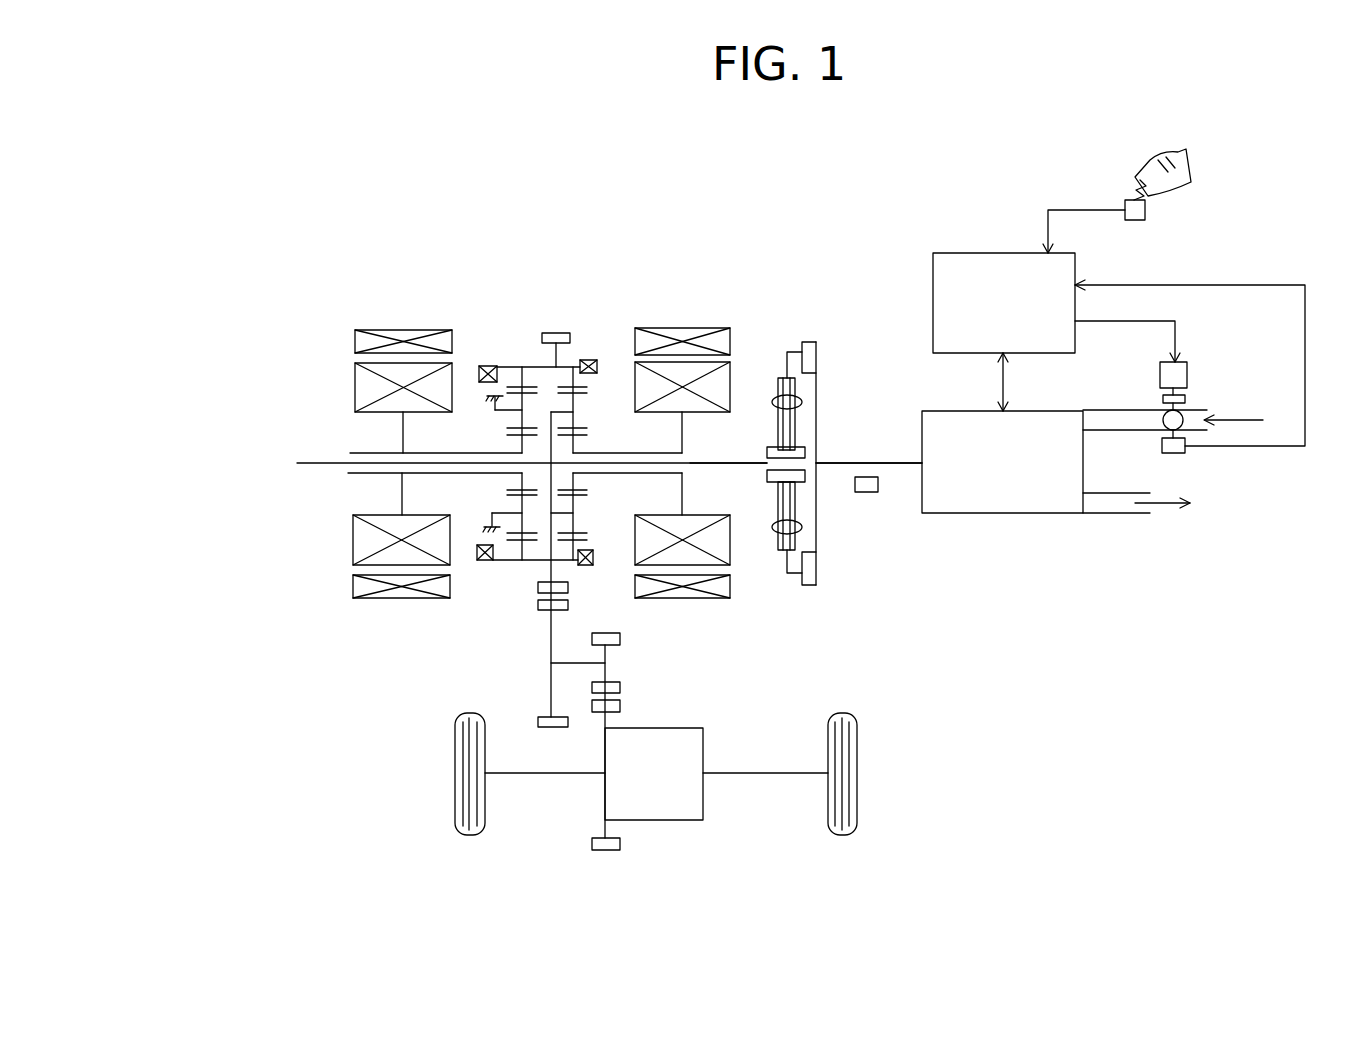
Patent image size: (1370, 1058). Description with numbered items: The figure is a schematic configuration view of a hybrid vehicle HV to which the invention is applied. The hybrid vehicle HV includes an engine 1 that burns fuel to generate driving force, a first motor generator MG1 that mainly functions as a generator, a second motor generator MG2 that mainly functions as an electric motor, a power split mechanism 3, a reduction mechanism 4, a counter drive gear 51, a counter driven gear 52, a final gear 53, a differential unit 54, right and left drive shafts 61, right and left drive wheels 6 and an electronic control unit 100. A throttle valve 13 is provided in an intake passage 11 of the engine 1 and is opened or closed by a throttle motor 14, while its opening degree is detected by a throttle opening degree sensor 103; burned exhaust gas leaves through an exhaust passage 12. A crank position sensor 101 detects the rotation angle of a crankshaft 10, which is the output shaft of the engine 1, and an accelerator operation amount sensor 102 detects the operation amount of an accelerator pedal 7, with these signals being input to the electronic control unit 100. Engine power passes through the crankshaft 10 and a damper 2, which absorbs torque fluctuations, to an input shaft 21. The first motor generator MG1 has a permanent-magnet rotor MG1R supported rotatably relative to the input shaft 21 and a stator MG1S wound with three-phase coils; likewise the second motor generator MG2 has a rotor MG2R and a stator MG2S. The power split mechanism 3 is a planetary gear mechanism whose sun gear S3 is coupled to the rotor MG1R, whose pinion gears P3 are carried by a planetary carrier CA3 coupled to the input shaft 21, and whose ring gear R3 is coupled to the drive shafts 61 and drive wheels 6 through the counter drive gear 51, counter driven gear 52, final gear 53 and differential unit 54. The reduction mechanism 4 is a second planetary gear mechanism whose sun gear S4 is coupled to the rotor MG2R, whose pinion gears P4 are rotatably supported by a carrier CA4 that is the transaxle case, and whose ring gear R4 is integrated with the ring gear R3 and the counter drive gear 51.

The engine 1 is at (1028, 514).
The damper 2 is at (820, 568).
The power split mechanism 3 is at (602, 359).
The reduction mechanism 4 is at (506, 362).
The drive wheels 6 is at (452, 740).
The accelerator pedal 7 is at (1130, 165).
The crankshaft 10 is at (860, 463).
The intake passage 11 is at (1120, 416).
The exhaust passage 12 is at (1113, 506).
The throttle valve 13 is at (1182, 415).
The throttle motor 14 is at (1187, 362).
The input shaft 21 is at (728, 463).
The counter drive gear 51 is at (556, 575).
The counter driven gear 52 is at (551, 648).
The final gear 53 is at (606, 655).
The differential unit 54 is at (666, 822).
The drive shafts 61 is at (533, 776).
The electronic control unit 100 is at (966, 253).
The crank position sensor 101 is at (868, 493).
The accelerator operation amount sensor 102 is at (1147, 210).
The throttle opening degree sensor 103 is at (1177, 454).
The hybrid vehicle HV is at (391, 224).
The first motor generator MG1 is at (838, 240).
The stator of first motor generator MG1S is at (696, 328).
The rotor of first motor generator MG1R is at (731, 375).
The second motor generator MG2 is at (226, 300).
The stator of second motor generator MG2S is at (355, 331).
The rotor of second motor generator MG2R is at (355, 377).
The ring gear of power split mechanism R3 is at (574, 366).
The sun gear of power split mechanism S3 is at (590, 436).
The pinion gears of power split mechanism P3 is at (586, 428).
The planetary carrier of power split mechanism CA3 is at (549, 515).
The ring gear of reduction mechanism R4 is at (535, 365).
The sun gear of reduction mechanism S4 is at (507, 433).
The pinion gears of reduction mechanism P4 is at (507, 495).
The carrier of reduction mechanism CA4 is at (492, 518).